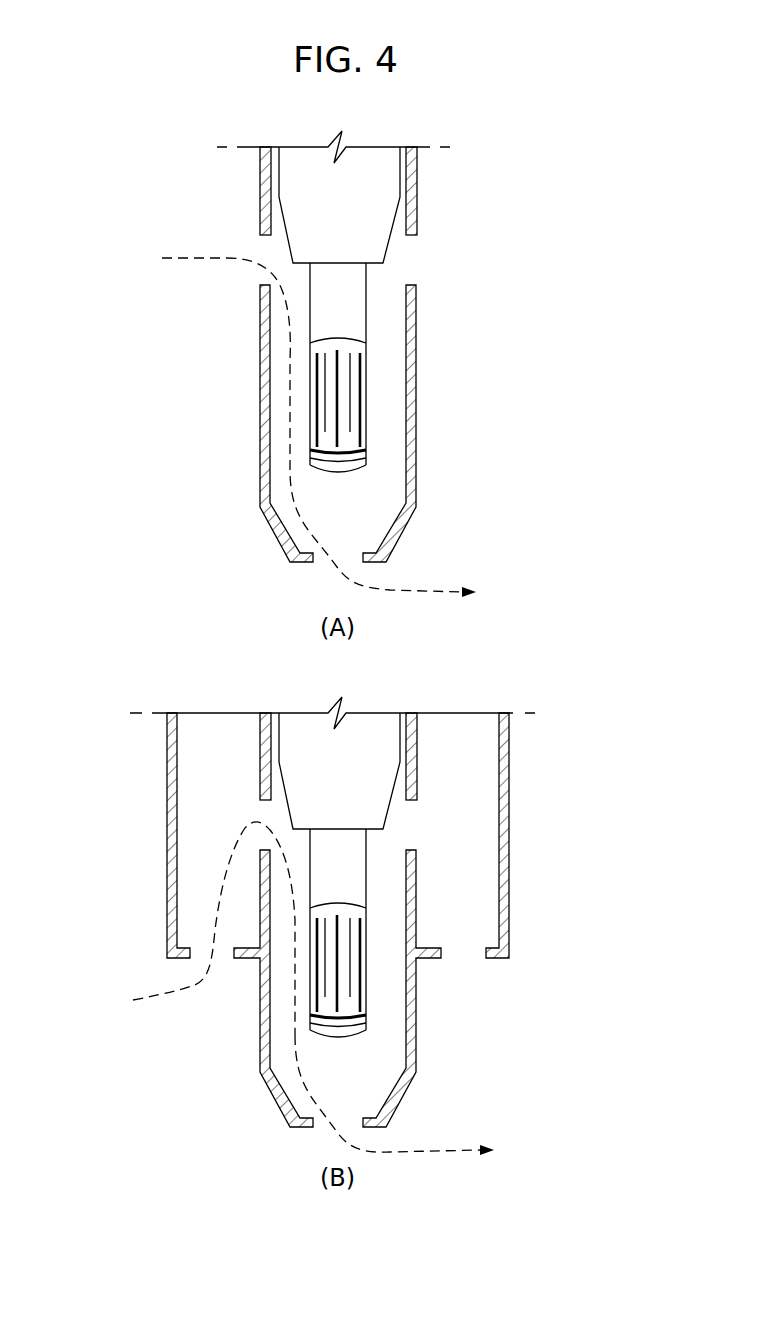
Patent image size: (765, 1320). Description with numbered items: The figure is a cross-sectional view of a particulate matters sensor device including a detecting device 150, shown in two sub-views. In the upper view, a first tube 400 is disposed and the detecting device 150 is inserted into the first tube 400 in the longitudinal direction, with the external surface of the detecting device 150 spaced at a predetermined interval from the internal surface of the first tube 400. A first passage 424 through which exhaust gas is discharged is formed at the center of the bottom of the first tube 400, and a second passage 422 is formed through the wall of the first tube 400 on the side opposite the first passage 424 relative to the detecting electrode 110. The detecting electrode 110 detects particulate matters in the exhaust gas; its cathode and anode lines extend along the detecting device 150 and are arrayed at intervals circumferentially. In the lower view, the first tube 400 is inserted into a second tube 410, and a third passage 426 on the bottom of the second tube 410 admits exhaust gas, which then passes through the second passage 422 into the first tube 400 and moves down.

The detecting electrode 110 is at (350, 386).
The detecting device 150 is at (380, 356).
The first tube 400 is at (260, 393).
The second tube 410 is at (167, 834).
The second passage 422 is at (413, 262).
The first passage 424 is at (323, 557).
The third passage 426 is at (203, 957).